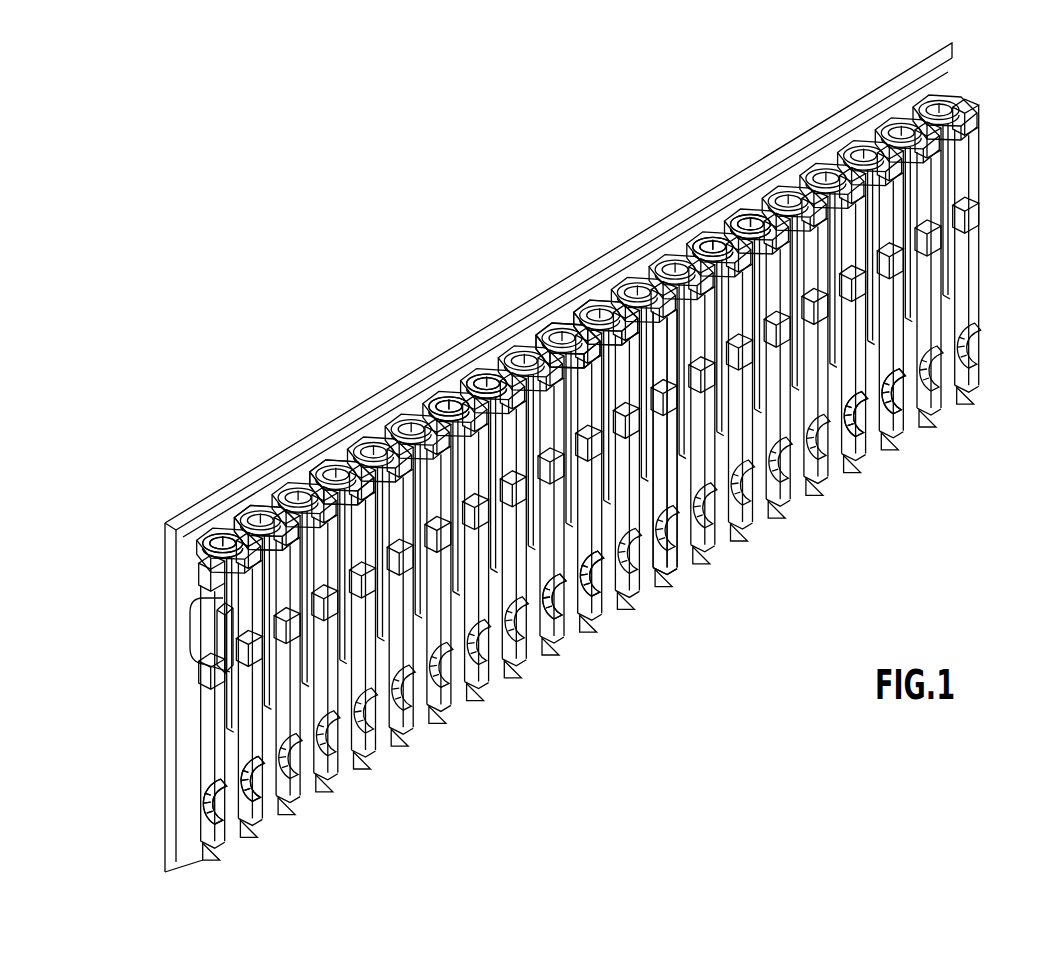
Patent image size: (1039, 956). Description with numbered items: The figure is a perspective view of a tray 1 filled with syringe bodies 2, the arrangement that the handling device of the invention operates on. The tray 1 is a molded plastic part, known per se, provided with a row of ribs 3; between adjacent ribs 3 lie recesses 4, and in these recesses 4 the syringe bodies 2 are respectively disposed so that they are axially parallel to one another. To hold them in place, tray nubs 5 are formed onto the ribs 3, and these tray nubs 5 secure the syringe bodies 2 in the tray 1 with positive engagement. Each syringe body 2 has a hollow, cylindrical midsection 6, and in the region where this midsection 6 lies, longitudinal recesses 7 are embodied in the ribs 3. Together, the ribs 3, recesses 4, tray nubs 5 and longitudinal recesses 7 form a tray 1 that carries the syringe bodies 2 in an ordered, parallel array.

The tray 1 is at (462, 715).
The syringe bodies 2 is at (343, 463).
The ribs 3 is at (898, 452).
The recesses 4 is at (655, 560).
The tray nubs 5 is at (228, 533).
The hollow, cylindrical midsection 6 is at (222, 640).
The longitudinal recesses 7 is at (200, 628).